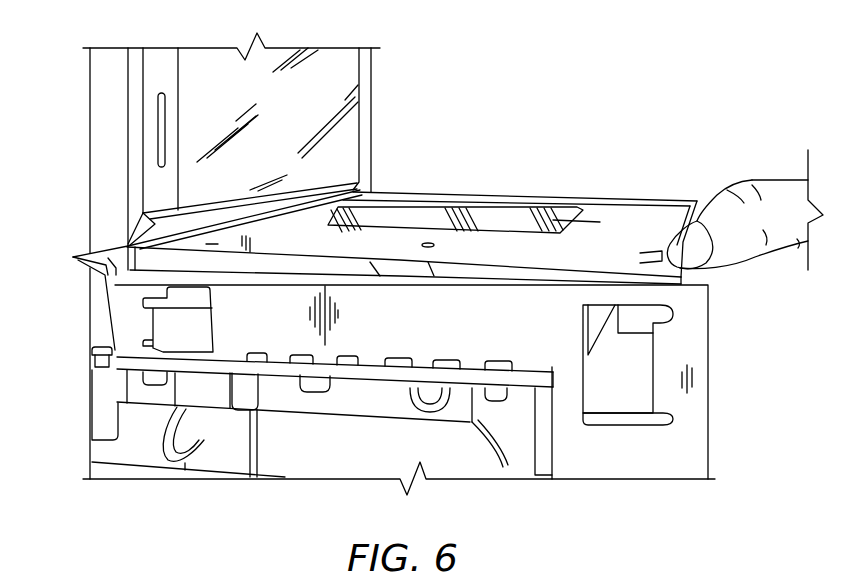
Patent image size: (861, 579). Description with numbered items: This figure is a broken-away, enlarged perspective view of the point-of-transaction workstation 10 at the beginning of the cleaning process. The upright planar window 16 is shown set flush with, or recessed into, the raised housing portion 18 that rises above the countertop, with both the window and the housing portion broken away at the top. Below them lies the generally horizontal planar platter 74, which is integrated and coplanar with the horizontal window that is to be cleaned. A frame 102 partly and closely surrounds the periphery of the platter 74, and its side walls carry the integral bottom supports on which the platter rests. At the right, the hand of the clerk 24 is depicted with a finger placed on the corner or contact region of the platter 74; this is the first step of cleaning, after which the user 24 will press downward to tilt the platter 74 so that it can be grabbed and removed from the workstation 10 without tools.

The point-of-transaction workstation 10 is at (83, 174).
The upright planar window 16 is at (204, 70).
The raised housing portion 18 is at (109, 71).
The clerk 24 is at (787, 197).
The platter 74 is at (638, 207).
The frame 102 is at (618, 446).